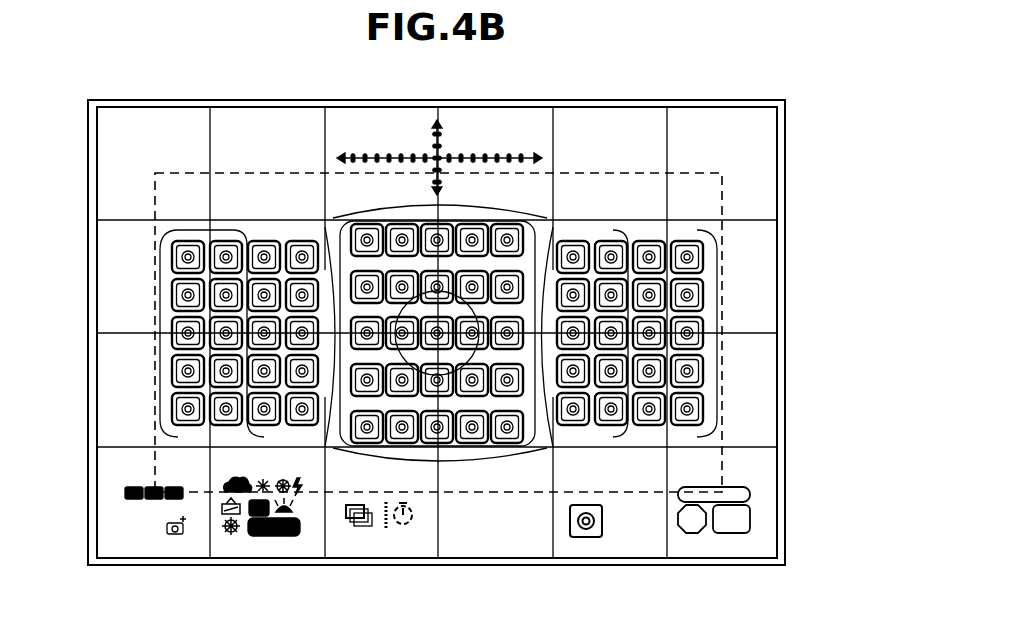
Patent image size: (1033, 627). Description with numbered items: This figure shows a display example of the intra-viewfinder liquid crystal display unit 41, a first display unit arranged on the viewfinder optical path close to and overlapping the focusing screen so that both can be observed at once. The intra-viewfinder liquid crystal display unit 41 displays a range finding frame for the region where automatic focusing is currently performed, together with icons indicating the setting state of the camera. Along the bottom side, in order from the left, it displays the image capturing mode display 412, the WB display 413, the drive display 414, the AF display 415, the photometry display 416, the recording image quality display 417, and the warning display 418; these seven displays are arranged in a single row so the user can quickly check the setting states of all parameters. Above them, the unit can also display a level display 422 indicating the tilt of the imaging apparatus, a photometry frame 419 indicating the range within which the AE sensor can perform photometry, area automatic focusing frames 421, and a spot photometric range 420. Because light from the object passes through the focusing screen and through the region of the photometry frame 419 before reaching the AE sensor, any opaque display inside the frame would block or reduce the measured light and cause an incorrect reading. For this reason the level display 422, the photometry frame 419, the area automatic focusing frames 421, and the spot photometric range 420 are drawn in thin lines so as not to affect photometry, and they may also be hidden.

The intra-viewfinder liquid crystal display unit 41 is at (745, 118).
The photometry frame 419 is at (722, 195).
The spot photometric range 420 is at (397, 356).
The area automatic focusing frames 421 is at (250, 230).
The level display 422 is at (477, 122).
The image capturing mode display 412 is at (158, 548).
The WB display 413 is at (272, 548).
The drive display 414 is at (385, 548).
The AF display 415 is at (502, 548).
The photometry display 416 is at (588, 548).
The recording image quality display 417 is at (644, 548).
The warning display 418 is at (717, 546).